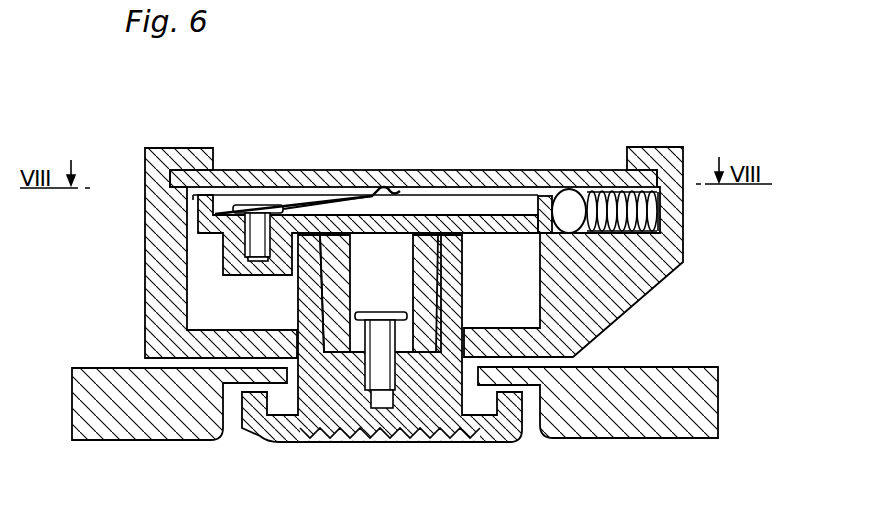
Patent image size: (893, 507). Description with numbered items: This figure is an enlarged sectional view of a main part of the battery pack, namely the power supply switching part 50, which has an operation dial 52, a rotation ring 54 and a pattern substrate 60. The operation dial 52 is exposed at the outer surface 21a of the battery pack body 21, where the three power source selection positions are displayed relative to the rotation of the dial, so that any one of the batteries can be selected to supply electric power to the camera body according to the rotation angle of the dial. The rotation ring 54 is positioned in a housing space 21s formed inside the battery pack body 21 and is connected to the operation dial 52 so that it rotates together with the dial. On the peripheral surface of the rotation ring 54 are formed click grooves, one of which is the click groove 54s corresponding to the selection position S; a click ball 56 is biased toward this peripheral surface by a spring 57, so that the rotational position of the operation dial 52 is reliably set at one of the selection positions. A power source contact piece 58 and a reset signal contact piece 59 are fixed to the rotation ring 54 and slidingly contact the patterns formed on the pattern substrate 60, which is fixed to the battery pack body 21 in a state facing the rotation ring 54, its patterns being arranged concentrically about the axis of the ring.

The power supply switching part 50 is at (522, 108).
The battery pack body 21 is at (625, 305).
The outer surface 21a is at (617, 440).
The housing space 21s is at (203, 193).
The operation dial 52 is at (347, 442).
The rotation ring 54 is at (228, 253).
The click groove 54s is at (545, 193).
The click ball 56 is at (577, 190).
The spring 57 is at (612, 187).
The power source contact piece 58 is at (387, 192).
The reset signal contact piece 59 is at (387, 192).
The pattern substrate 60 is at (454, 172).